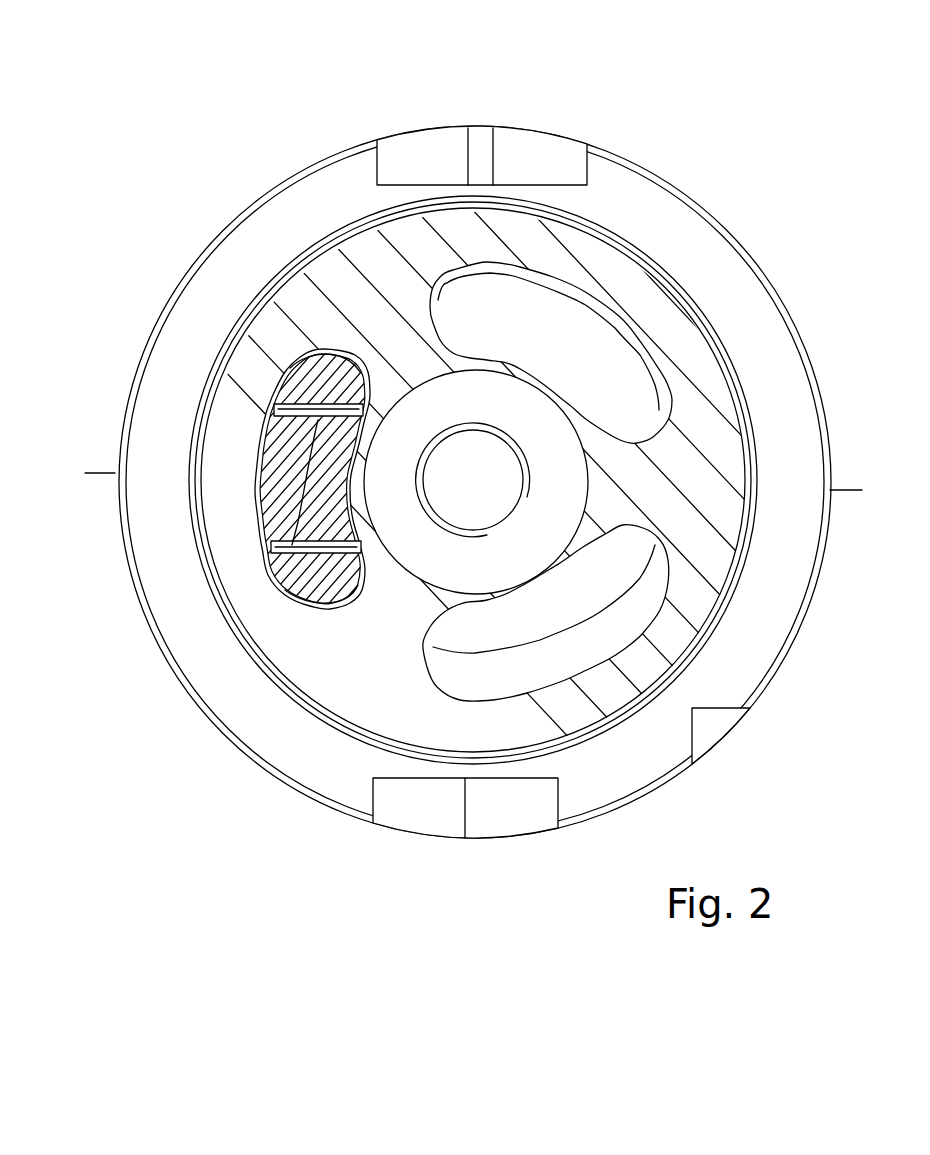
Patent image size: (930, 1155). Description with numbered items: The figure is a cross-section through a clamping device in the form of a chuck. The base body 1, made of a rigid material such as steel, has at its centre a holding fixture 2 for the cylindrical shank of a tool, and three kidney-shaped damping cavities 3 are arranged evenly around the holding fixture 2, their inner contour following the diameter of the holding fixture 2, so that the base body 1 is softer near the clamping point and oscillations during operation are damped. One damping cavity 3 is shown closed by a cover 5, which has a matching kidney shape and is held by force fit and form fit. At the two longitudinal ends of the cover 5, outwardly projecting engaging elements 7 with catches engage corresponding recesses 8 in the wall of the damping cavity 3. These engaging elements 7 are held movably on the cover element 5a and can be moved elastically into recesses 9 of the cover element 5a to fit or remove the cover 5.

The base body 1 is at (281, 218).
The holding fixture 2 is at (403, 527).
The damping cavities 3 is at (278, 375).
The cover 5 is at (279, 470).
The cover element 5a is at (270, 513).
The engaging elements 7 is at (355, 352).
The recesses 8 is at (338, 350).
The recesses of the cover element 9 is at (280, 412).